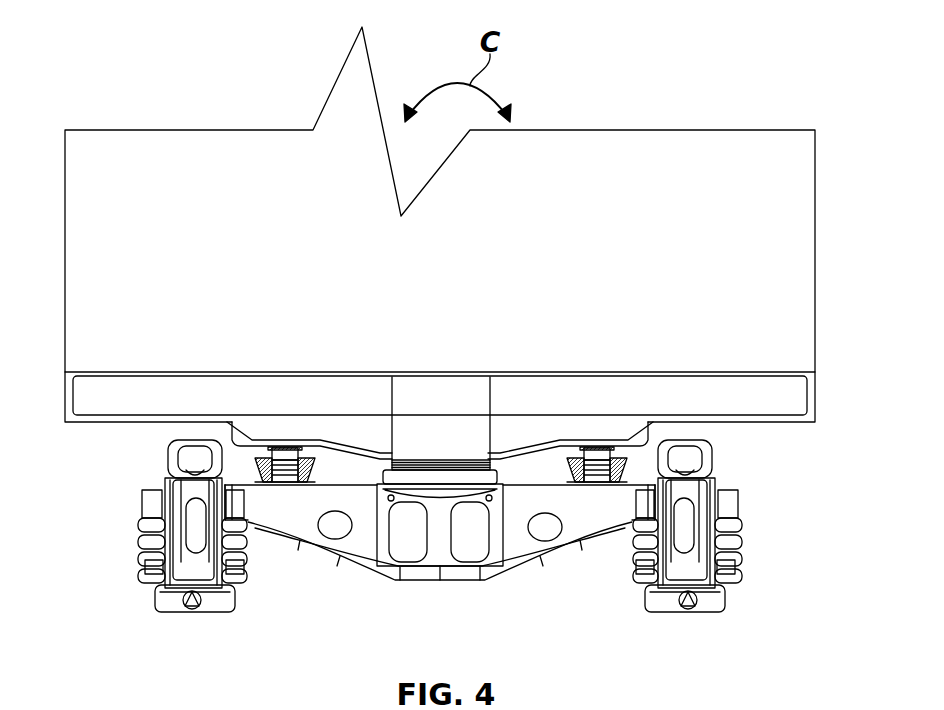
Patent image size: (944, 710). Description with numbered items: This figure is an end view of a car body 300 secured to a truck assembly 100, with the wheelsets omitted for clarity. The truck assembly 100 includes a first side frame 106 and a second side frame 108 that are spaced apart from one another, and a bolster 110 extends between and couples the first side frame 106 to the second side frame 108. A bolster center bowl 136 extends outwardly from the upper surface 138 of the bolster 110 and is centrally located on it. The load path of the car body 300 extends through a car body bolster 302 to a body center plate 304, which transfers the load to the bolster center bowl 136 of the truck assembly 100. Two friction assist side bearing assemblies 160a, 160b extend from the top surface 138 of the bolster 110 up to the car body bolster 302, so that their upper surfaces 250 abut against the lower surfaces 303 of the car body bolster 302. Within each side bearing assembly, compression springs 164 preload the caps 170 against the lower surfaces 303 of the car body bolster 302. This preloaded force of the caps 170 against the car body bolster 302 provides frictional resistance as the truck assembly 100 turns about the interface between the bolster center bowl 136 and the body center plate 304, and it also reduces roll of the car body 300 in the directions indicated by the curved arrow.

The car body 300 is at (233, 163).
The body center plate 304 is at (438, 450).
The car body bolster 302 is at (592, 445).
The cap 170 is at (283, 447).
The lower surfaces 303 is at (264, 468).
The upper surface 138 is at (352, 488).
The upper surfaces 250 is at (590, 440).
The bolster center bowl 136 is at (432, 478).
The bolster 110 is at (362, 550).
The springs 164 is at (330, 540).
The first side frame 106 is at (173, 480).
The second side frame 108 is at (713, 476).
The truck assembly 100 is at (156, 488).
The friction assist side bearing assembly 160a is at (285, 487).
The friction assist side bearing assembly 160b is at (593, 487).